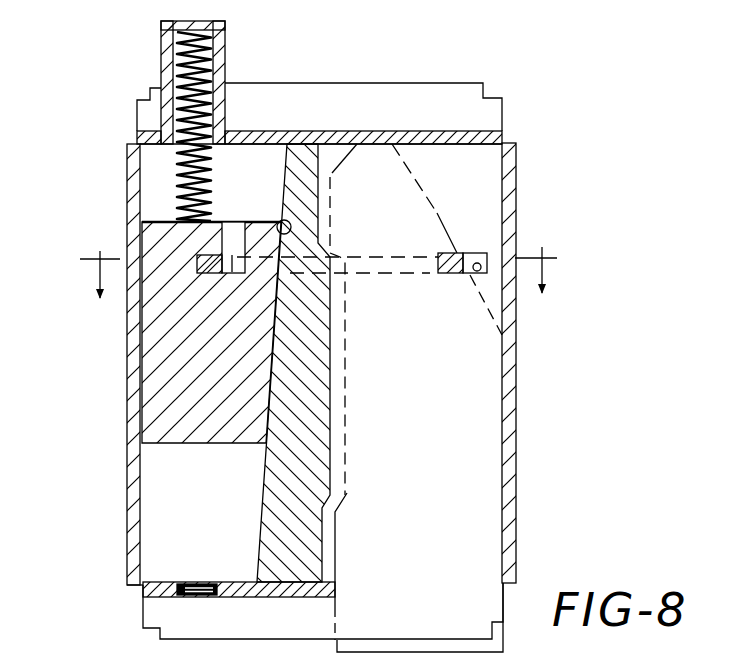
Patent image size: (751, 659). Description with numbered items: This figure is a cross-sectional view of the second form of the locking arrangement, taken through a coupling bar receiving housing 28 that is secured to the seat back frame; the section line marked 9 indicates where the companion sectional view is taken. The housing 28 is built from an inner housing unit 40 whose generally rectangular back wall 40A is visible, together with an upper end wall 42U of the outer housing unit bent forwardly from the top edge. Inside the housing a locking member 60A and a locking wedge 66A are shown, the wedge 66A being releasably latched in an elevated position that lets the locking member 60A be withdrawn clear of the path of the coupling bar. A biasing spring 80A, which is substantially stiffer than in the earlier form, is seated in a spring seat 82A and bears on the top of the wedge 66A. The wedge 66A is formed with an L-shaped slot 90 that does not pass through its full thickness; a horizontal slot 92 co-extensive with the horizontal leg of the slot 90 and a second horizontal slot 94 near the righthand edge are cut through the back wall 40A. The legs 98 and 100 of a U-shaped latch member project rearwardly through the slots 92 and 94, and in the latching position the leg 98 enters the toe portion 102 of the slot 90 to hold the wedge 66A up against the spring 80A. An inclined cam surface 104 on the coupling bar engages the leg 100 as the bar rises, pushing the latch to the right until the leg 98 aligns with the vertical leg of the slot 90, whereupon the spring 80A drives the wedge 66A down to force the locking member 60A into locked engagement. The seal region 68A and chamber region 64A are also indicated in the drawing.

The coupling bar receiving housing 28 is at (98, 146).
The inner housing unit 40 is at (354, 81).
The back wall of inner housing unit 40A is at (477, 177).
The upper end wall of outer housing unit 42U is at (423, 130).
The spring seat 82A is at (233, 39).
The biasing spring 80A is at (217, 67).
The seal 68A is at (287, 215).
The locking wedge member 66A is at (165, 413).
The chamber 64A is at (260, 520).
The locking member 60A is at (332, 423).
The horizontal slot 92 is at (237, 290).
The leg of latch member 98 is at (197, 266).
The L-shaped slot 90 is at (221, 266).
The toe portion of L-shaped slot 102 is at (213, 257).
The second horizontal slot 94 is at (477, 283).
The leg of latch member 100 is at (450, 253).
The inclined cam surface 104 is at (437, 213).
The section line 9- 9 is at (318, 293).